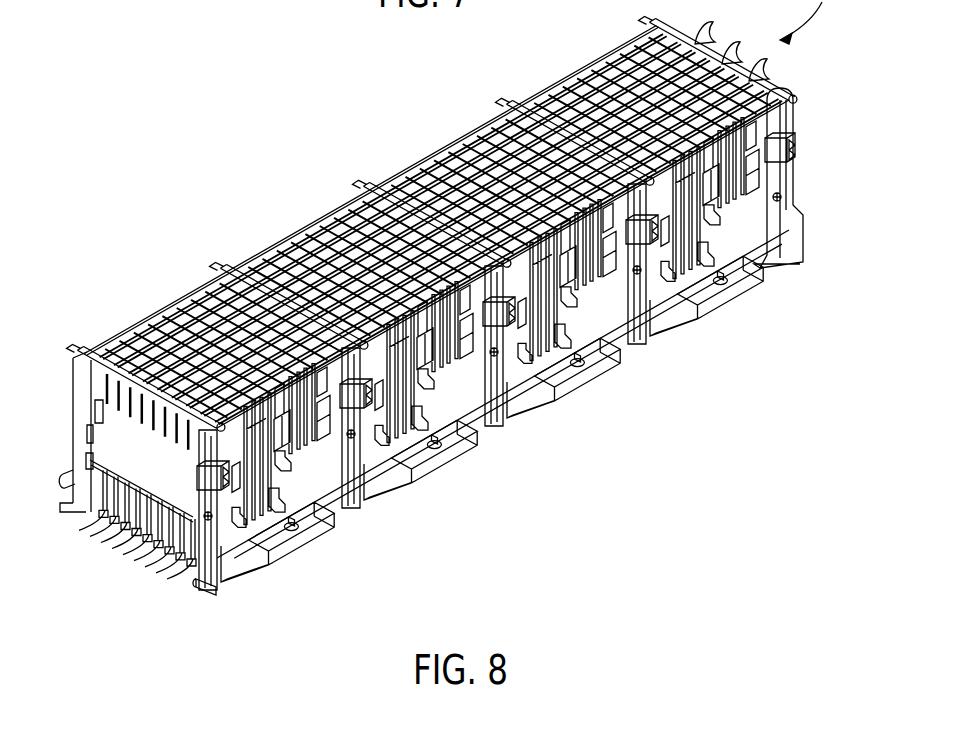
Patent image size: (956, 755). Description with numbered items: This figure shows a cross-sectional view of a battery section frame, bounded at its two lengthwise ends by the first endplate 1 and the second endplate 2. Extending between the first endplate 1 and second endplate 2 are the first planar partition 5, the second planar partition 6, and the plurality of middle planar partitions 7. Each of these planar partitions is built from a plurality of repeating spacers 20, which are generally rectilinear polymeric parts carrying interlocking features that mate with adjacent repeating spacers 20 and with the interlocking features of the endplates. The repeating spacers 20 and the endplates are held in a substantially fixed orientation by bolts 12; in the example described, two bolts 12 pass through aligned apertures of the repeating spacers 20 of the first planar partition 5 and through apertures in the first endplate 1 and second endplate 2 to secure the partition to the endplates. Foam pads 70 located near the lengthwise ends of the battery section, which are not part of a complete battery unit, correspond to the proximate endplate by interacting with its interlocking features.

The first endplate 1 is at (82, 376).
The second endplate 2 is at (212, 518).
The first planar partition 5 is at (233, 590).
The second planar partition 6 is at (806, 258).
The middle planar partitions 7 is at (387, 503).
The bolt 12 is at (240, 270).
The repeating spacer 20 is at (97, 508).
The foam pads 70 is at (717, 17).